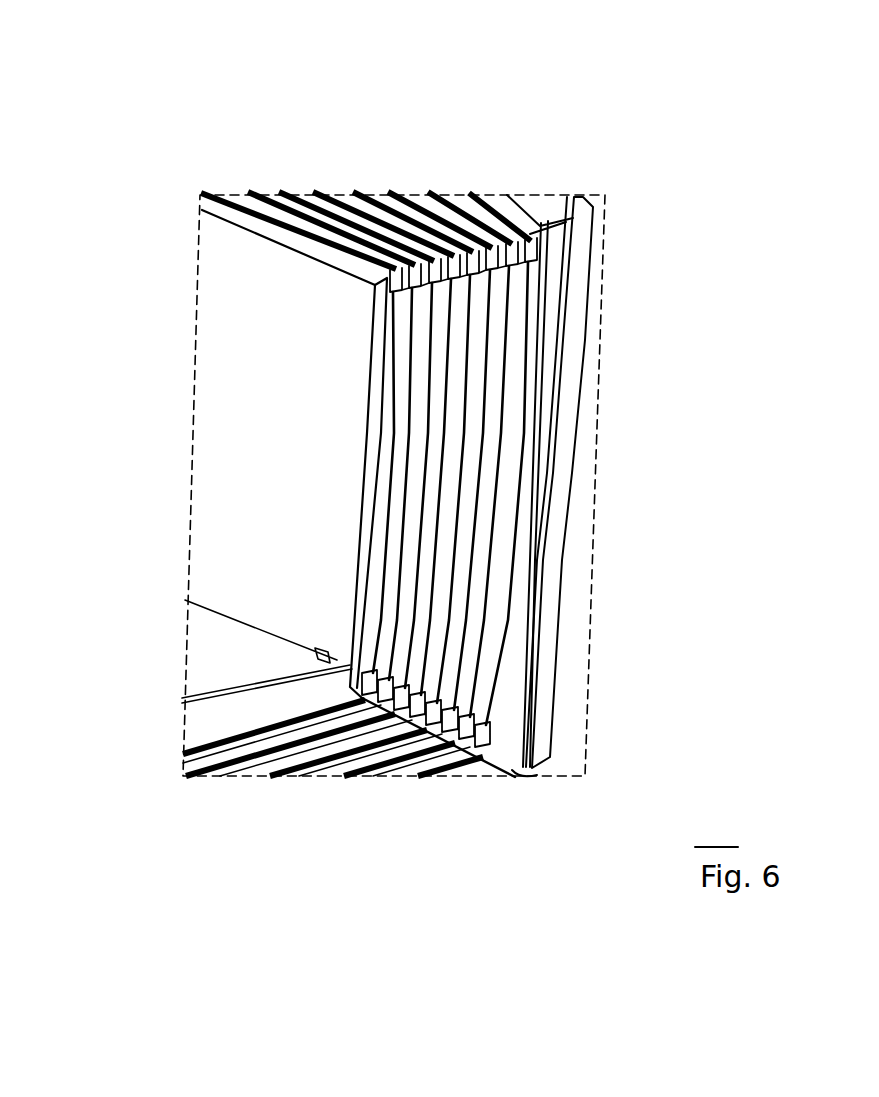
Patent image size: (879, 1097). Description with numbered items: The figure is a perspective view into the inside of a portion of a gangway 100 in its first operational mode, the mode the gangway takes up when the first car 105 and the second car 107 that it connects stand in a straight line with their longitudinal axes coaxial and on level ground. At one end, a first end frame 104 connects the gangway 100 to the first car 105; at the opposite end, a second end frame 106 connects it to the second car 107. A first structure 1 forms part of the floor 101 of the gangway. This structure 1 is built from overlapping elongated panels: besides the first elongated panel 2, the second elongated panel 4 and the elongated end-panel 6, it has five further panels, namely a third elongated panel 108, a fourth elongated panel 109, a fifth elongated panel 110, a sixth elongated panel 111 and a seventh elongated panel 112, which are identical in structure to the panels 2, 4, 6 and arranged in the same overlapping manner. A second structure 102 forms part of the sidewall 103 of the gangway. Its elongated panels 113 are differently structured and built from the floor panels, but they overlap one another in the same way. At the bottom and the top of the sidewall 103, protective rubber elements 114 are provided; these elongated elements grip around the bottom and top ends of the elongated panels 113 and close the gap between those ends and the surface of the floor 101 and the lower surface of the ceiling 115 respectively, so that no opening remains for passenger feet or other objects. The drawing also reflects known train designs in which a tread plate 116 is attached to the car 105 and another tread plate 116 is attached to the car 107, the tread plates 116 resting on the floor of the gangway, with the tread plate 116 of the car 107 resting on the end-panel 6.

The gangway 100 is at (625, 165).
The floor 101 is at (255, 782).
The second structure 102 is at (470, 395).
The sidewall 103 is at (508, 492).
The first end frame 104 is at (528, 608).
The first car 105 is at (552, 578).
The second end frame 106 is at (380, 307).
The second car 107 is at (358, 408).
The third elongated panel 108 is at (439, 755).
The fourth elongated panel 109 is at (418, 744).
The fifth elongated panel 110 is at (397, 738).
The sixth elongated panel 111 is at (359, 721).
The seventh elongated panel 112 is at (338, 713).
The elongated panels 113 is at (522, 333).
The protective rubber elements 114 is at (529, 243).
The ceiling 115 is at (455, 198).
The tread plate 116 is at (232, 729).
The first structure 1 is at (382, 729).
The first elongated panel 2 is at (445, 760).
The second elongated panel 4 is at (466, 762).
The elongated end-panel 6 is at (508, 781).